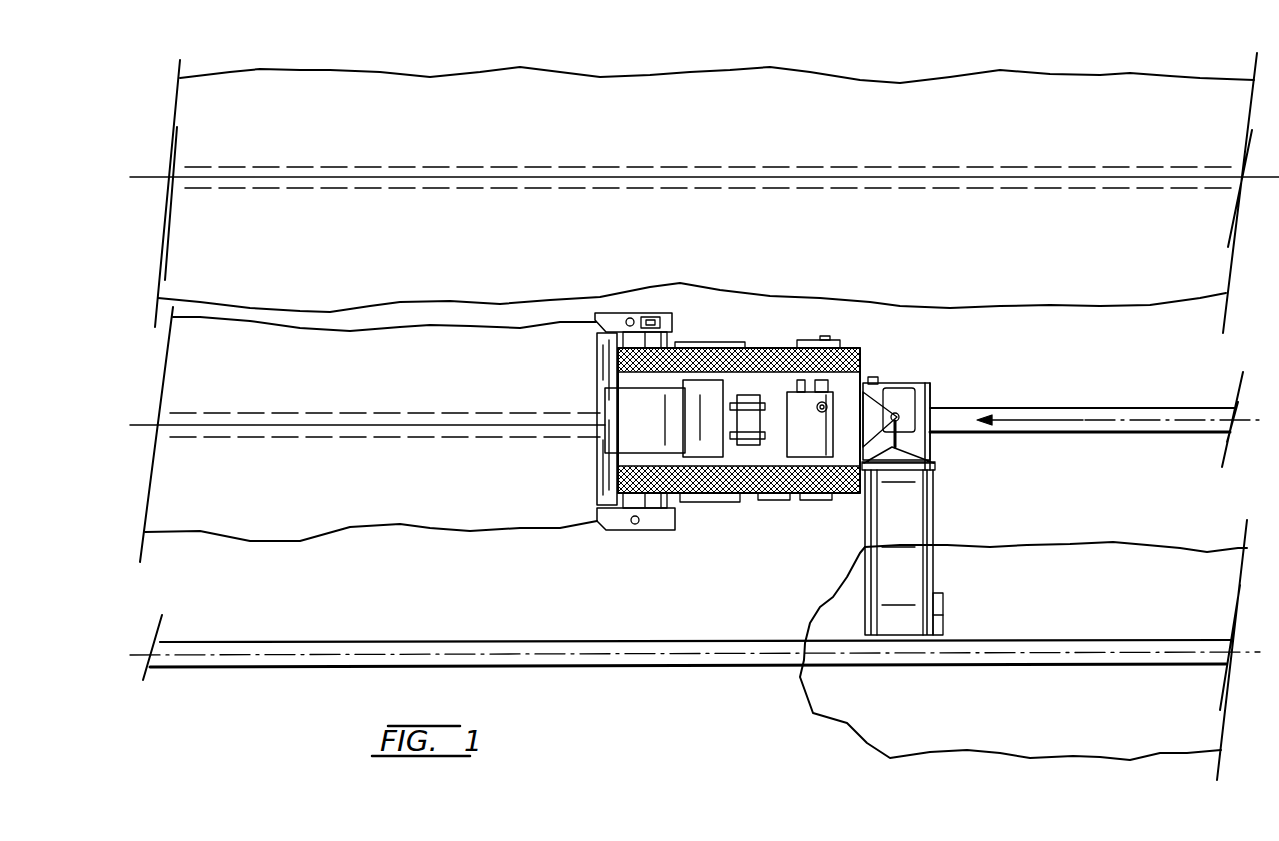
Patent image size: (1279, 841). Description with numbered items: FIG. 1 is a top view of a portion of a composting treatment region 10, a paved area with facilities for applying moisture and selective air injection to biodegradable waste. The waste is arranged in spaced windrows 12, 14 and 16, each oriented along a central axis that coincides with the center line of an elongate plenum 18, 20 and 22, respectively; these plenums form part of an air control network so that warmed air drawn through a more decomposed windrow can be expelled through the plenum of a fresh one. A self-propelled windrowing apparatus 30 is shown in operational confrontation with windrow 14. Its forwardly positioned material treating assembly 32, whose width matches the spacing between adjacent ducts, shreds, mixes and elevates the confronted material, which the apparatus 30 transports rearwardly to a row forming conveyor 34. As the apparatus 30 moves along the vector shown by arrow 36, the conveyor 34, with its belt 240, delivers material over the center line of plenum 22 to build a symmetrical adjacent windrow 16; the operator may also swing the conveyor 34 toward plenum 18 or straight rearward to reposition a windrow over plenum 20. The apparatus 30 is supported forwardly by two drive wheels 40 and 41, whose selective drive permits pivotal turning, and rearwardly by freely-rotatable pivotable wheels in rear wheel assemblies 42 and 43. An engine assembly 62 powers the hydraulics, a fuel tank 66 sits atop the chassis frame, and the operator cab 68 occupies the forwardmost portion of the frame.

The treatment region 10 is at (1042, 65).
The windrow 12 is at (857, 100).
The windrow 14 is at (330, 505).
The windrow 16 is at (863, 723).
The plenum 18 is at (524, 165).
The plenum 20 is at (1160, 408).
The plenum 22 is at (506, 642).
The windrowing apparatus 30 is at (966, 361).
The material treating assembly 32 is at (682, 333).
The row forming conveyor 34 is at (912, 535).
The arrow 36 is at (1044, 420).
The drive wheel 40 is at (712, 500).
The drive wheel 41 is at (705, 338).
The rear wheel assembly 42 is at (830, 347).
The rear wheel assembly 43 is at (833, 500).
The engine assembly 62 is at (834, 400).
The fuel tank 66 is at (753, 397).
The operator cab 68 is at (623, 429).
The belt 240 is at (917, 507).